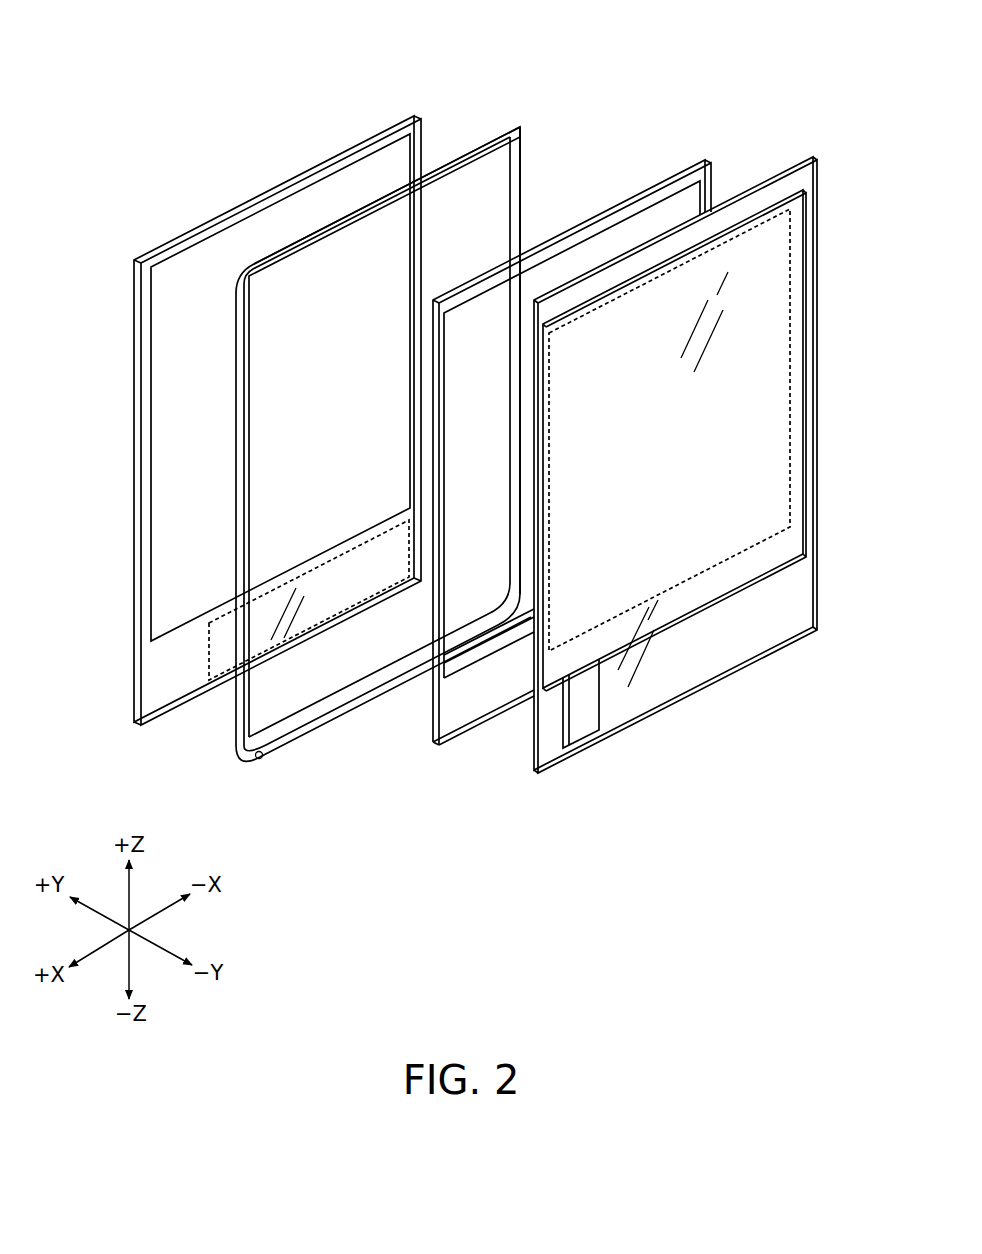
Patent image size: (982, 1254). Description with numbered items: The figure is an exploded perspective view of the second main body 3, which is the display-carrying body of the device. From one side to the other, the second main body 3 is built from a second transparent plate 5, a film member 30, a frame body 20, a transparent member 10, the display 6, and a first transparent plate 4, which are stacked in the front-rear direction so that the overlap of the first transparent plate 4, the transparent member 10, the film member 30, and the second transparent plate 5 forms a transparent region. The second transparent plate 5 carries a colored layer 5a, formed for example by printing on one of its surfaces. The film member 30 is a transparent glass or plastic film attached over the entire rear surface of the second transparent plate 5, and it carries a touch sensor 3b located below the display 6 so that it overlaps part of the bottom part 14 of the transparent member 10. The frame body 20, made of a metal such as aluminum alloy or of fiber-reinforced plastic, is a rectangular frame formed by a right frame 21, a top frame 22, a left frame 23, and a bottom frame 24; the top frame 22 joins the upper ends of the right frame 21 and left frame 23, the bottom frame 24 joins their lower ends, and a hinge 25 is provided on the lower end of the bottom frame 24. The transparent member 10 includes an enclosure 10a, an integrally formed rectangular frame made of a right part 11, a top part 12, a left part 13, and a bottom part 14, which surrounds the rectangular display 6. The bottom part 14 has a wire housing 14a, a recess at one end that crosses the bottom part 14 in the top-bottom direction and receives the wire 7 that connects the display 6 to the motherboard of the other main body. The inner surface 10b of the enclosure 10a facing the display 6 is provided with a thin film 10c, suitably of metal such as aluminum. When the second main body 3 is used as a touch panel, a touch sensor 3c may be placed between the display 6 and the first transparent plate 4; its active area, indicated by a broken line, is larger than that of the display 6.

The second main body 3 is at (190, 108).
The first transparent plate 4 is at (817, 310).
The second transparent plate 5 is at (334, 158).
The colored layer 5a is at (172, 248).
The display 6 is at (768, 487).
The wire 7 is at (577, 712).
The transparent member 10 is at (504, 708).
The enclosure 10a is at (612, 68).
The inner surface 10b is at (693, 198).
The thin film 10c is at (607, 390).
The right part 11 is at (733, 175).
The top part 12 is at (690, 167).
The left part 13 is at (442, 313).
The bottom part 14 is at (522, 663).
The wire housing 14a is at (478, 660).
The frame body 20 is at (505, 113).
The right frame 21 is at (524, 172).
The top frame 22 is at (440, 178).
The left frame 23 is at (235, 432).
The bottom frame 24 is at (323, 708).
The hinge 25 is at (262, 760).
The film member 30 is at (244, 230).
The touch sensor 3b is at (208, 682).
The touch sensor 3c is at (792, 418).